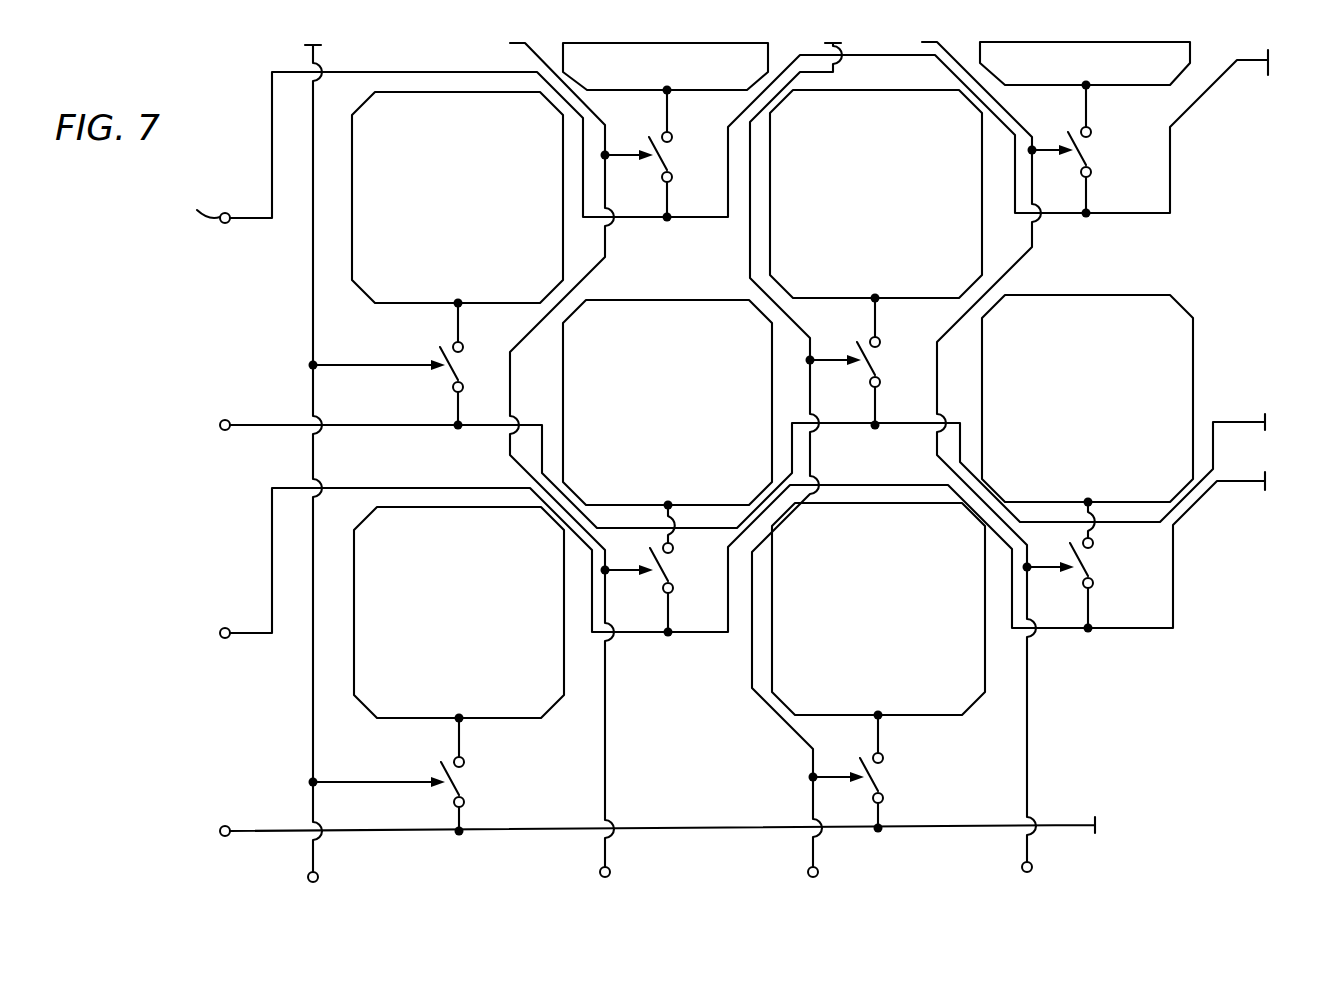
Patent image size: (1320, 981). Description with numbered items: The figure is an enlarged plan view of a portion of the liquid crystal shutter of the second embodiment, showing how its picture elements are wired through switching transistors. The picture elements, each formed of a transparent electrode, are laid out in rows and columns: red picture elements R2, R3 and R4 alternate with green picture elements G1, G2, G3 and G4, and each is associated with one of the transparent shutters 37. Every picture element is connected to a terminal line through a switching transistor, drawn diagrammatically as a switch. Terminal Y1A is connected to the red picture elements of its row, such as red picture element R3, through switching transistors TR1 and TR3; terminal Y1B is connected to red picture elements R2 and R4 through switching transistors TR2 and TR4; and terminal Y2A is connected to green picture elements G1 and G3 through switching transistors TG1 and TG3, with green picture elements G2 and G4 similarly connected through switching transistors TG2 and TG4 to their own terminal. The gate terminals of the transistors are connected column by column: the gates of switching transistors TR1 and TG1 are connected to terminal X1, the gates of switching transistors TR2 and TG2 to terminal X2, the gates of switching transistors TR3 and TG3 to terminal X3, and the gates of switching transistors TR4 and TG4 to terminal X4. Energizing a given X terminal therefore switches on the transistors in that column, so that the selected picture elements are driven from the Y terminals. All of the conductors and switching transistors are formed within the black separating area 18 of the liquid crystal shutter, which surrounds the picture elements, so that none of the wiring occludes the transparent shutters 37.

The black separating area 18 is at (397, 70).
The transparent shutters 37 is at (367, 714).
The green picture element G1 is at (457, 197).
The green picture element G2 is at (665, 66).
The green picture element G3 is at (876, 194).
The green picture element G4 is at (1085, 63).
The red picture element R2 is at (667, 402).
The red picture element R3 is at (878, 609).
The red picture element R4 is at (1087, 398).
The switching transistor TG1 is at (444, 369).
The switching transistor TG2 is at (673, 152).
The switching transistor TG3 is at (886, 351).
The switching transistor TG4 is at (1096, 148).
The switching transistor TR1 is at (468, 777).
The switching transistor TR2 is at (697, 583).
The switching transistor TR3 is at (884, 782).
The switching transistor TR4 is at (1096, 567).
The terminal X1 is at (319, 876).
The terminal X2 is at (611, 872).
The terminal X3 is at (819, 872).
The terminal X4 is at (1033, 866).
The terminal Y1A is at (221, 829).
The terminal Y1B is at (220, 634).
The terminal Y2A is at (220, 426).